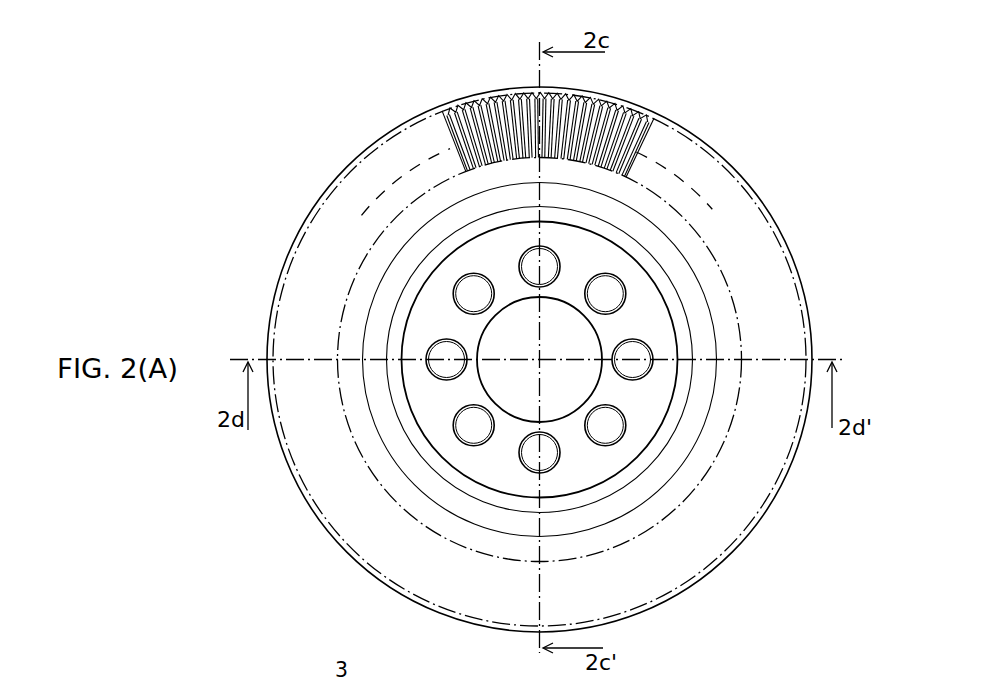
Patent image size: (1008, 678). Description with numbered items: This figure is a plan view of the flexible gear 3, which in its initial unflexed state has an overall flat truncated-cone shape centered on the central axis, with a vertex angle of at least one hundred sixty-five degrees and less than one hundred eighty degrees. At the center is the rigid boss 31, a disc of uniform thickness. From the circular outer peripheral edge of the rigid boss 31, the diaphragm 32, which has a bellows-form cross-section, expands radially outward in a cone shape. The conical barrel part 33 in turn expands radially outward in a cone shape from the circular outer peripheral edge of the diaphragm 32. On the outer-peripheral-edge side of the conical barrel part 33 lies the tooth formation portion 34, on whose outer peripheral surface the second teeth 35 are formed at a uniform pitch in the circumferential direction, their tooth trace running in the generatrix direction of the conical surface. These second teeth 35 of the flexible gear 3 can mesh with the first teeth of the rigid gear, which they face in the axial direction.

The flexible gear 3 is at (312, 160).
The rigid boss 31 is at (662, 332).
The diaphragm 32 is at (683, 275).
The conical barrel part 33 is at (672, 222).
The tooth formation portion 34 is at (673, 145).
The second teeth 35 is at (642, 108).